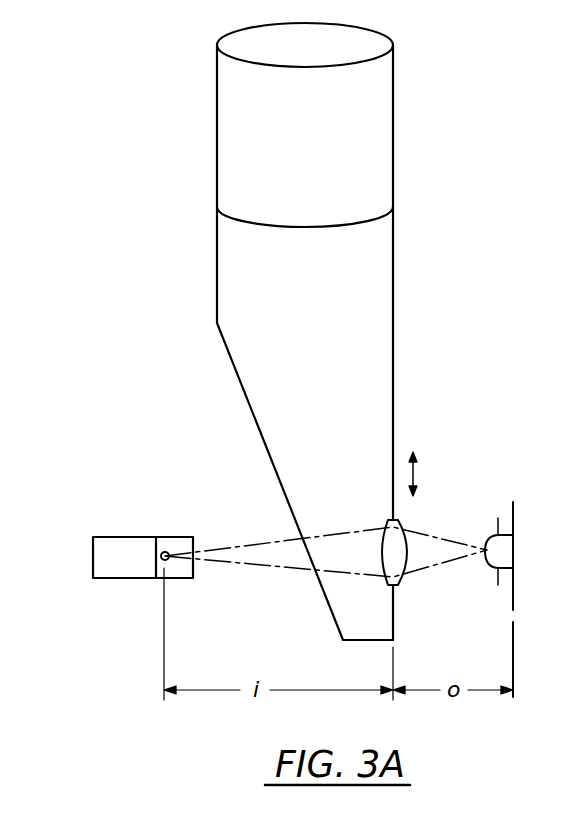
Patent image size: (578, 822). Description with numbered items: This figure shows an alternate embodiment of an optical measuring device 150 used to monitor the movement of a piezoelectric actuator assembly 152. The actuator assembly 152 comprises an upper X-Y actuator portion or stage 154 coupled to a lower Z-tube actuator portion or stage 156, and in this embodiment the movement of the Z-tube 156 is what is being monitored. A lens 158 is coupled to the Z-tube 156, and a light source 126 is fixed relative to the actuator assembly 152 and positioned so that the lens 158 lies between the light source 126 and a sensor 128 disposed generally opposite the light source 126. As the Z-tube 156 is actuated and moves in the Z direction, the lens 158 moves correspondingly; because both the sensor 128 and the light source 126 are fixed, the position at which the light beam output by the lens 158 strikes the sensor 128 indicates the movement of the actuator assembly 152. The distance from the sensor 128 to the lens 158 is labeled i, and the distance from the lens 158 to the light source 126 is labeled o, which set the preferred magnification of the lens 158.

The piezoelectric actuator assembly 152 is at (364, 335).
The upper X-Y actuator portion 154 is at (387, 108).
The lower Z-tube actuator portion 156 is at (387, 352).
The measuring device 150 is at (315, 612).
The lens 158 is at (400, 585).
The sensor 128 is at (108, 578).
The light source 126 is at (498, 535).